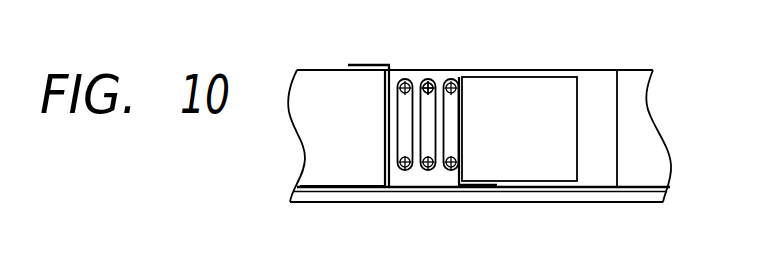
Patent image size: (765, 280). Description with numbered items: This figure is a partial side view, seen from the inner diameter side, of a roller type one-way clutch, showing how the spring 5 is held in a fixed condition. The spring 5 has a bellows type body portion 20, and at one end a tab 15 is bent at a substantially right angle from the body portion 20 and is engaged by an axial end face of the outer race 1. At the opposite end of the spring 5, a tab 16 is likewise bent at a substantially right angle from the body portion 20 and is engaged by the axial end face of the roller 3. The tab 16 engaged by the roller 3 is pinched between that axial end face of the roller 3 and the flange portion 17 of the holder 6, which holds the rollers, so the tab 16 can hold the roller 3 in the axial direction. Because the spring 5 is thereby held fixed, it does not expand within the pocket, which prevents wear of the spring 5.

The outer race 1 is at (313, 88).
The roller 3 is at (526, 90).
The spring 5 is at (440, 58).
The holder 6 is at (600, 85).
The tab 15 is at (371, 62).
The tab 16 is at (483, 187).
The flange portion 17 is at (607, 191).
The body portion 20 is at (418, 171).